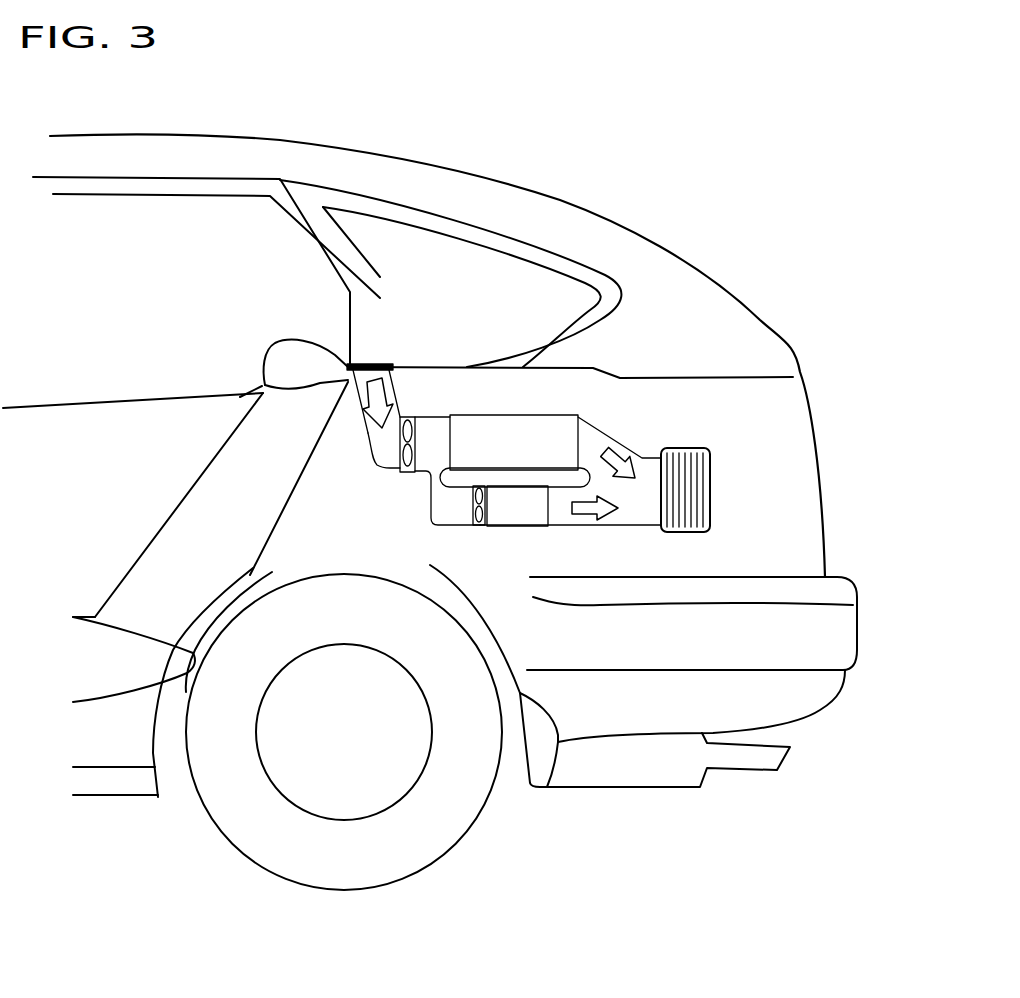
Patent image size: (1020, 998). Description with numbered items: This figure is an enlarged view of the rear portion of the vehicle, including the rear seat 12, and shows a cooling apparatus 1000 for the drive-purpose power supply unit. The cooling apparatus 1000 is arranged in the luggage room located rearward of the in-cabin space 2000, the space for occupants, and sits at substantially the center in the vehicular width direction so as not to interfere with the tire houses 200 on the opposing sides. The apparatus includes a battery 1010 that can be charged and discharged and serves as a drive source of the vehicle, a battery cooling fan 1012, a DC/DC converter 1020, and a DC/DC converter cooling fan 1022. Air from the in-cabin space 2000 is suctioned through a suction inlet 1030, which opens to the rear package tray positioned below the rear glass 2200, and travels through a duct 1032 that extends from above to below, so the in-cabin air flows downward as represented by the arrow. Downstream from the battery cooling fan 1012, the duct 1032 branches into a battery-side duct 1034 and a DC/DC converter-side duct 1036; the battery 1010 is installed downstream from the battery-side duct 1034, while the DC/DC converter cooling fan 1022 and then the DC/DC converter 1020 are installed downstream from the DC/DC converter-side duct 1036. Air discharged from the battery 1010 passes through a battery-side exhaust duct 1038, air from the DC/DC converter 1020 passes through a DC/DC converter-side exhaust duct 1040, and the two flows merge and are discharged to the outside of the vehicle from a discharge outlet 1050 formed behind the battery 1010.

The rear seat 12 is at (150, 548).
The tire house 200 is at (497, 628).
The cooling apparatus 1000 is at (602, 397).
The battery 1010 is at (537, 423).
The battery cooling fan 1012 is at (427, 397).
The DC/DC converter 1020 is at (537, 513).
The DC/DC converter cooling fan 1022 is at (478, 527).
The suction inlet 1030 is at (365, 363).
The duct 1032 is at (368, 436).
The battery-side duct 1034 is at (432, 426).
The DC/DC converter-side duct 1036 is at (442, 507).
The battery-side exhaust duct 1038 is at (620, 448).
The DC/DC converter-side exhaust duct 1040 is at (633, 513).
The discharge outlet 1050 is at (693, 448).
The in-cabin space 2000 is at (133, 367).
The rear glass 2200 is at (505, 180).